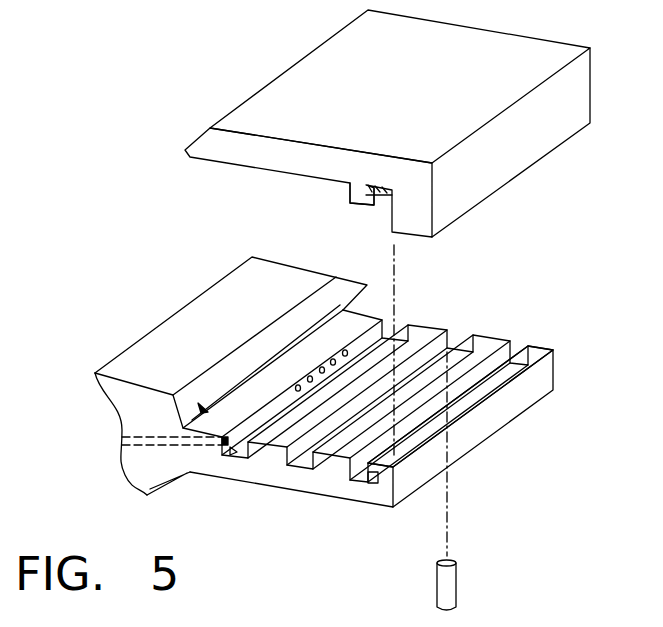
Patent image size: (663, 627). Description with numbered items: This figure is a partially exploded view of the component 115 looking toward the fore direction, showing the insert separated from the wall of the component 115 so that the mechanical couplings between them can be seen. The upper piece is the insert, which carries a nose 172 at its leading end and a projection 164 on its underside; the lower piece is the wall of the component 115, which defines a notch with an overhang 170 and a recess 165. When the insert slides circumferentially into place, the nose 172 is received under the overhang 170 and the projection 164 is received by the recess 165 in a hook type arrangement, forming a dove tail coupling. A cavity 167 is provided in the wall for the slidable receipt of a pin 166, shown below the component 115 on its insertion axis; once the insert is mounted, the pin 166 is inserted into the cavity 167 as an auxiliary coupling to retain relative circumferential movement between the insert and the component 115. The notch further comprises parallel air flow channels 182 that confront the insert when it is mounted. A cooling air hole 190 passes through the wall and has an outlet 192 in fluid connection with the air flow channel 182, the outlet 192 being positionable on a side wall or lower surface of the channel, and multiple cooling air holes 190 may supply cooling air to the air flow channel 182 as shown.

The component 115 is at (77, 305).
The projection 164 is at (349, 193).
The recess 165 is at (370, 483).
The pin 166 is at (457, 578).
The cavity 167 is at (450, 400).
The overhang 170 is at (342, 290).
The nose 172 is at (197, 137).
The air flow channel 182 is at (392, 330).
The cooling air hole 190 is at (147, 456).
The outlet 192 is at (297, 387).